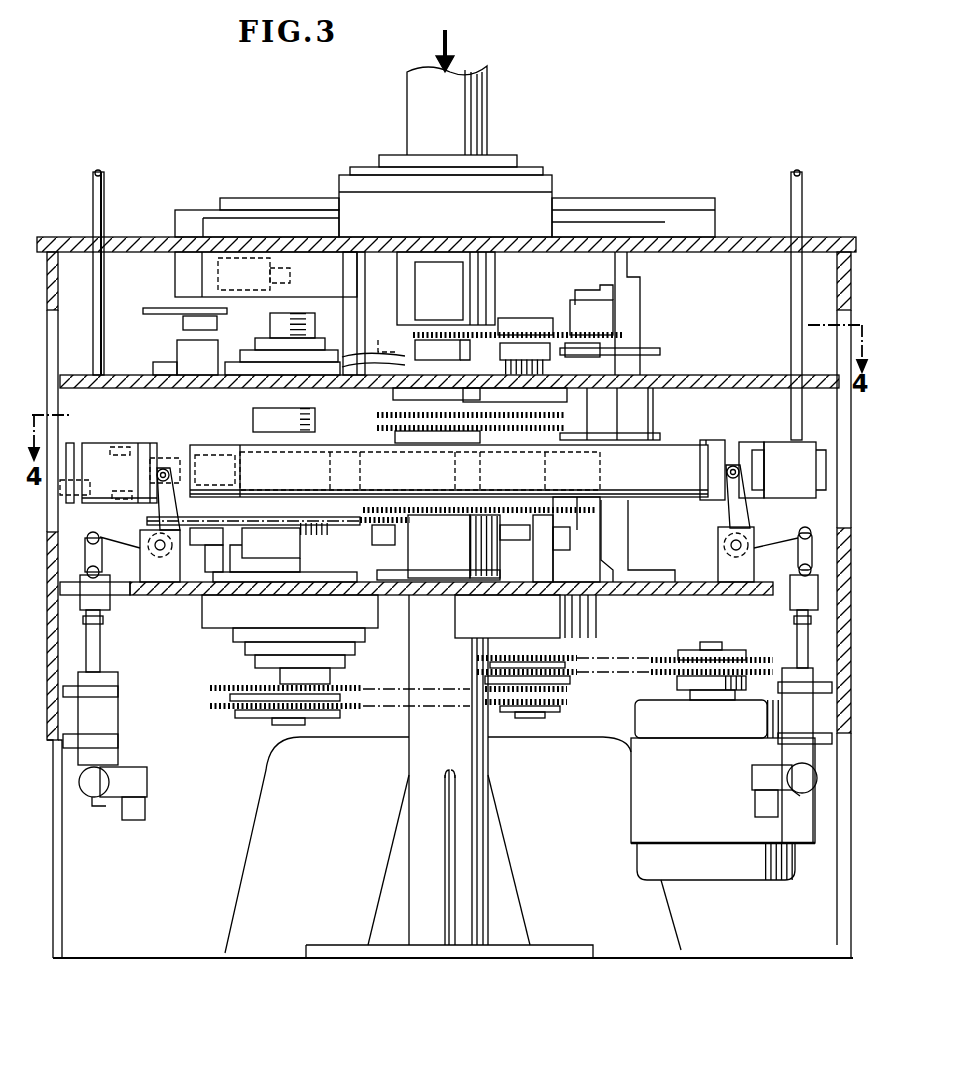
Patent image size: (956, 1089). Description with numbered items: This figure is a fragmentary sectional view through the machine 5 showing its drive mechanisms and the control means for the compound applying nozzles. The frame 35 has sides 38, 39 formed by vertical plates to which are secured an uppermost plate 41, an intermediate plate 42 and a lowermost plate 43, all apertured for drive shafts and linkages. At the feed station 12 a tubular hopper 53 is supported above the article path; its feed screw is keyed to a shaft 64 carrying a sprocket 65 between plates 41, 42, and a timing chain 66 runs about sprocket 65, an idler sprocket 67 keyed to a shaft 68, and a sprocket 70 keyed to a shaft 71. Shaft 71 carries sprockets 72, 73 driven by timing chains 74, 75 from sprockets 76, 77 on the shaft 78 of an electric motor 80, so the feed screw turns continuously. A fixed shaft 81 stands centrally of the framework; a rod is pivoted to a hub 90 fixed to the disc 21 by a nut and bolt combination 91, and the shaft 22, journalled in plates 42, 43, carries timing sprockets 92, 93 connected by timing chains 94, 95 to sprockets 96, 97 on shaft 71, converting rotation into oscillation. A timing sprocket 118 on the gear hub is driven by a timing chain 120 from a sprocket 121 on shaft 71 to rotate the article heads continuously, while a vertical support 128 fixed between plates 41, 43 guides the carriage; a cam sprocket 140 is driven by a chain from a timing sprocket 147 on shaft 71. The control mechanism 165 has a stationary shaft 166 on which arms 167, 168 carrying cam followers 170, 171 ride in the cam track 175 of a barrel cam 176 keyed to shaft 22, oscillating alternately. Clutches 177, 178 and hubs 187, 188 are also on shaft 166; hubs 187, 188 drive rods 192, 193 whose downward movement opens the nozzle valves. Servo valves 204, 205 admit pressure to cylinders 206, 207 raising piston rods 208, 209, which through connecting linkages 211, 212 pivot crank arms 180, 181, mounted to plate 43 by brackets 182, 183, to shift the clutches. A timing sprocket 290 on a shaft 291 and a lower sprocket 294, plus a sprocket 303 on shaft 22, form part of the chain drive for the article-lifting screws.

The machine 5 is at (657, 128).
The feed station 12 is at (512, 128).
The disc 21 is at (312, 300).
The shaft 22 is at (282, 312).
The frame 35 is at (742, 236).
The side 38 is at (47, 735).
The side 39 is at (837, 657).
The uppermost plate 41 is at (130, 236).
The intermediate plate 42 is at (135, 374).
The lowermost plate 43 is at (143, 594).
The tubular hopper 53 is at (405, 96).
The shaft 64 is at (373, 350).
The sprocket 65 is at (436, 330).
The timing chain 66 is at (498, 330).
The idler sprocket 67 is at (608, 318).
The shaft 68 is at (575, 296).
The sprocket 70 is at (525, 330).
The shaft 71 is at (518, 530).
The sprocket 72 is at (560, 640).
The sprocket 73 is at (590, 660).
The timing chain 74 is at (642, 650).
The timing chain 75 is at (620, 672).
The sprocket 76 is at (672, 655).
The sprocket 77 is at (672, 690).
The shaft 78 is at (720, 642).
The electric motor 80 is at (708, 731).
The fixed shaft 81 is at (449, 798).
The hub 90 is at (250, 245).
The threaded nut and bolt combination 91 is at (240, 312).
The timing sprocket 92 is at (212, 684).
The timing sprocket 93 is at (212, 712).
The timing chain 94 is at (426, 690).
The timing chain 95 is at (384, 736).
The timing sprocket 96 is at (570, 692).
The timing sprocket 97 is at (566, 722).
The timing sprocket 118 is at (394, 528).
The timing chain 120 is at (560, 512).
The sprocket 121 is at (557, 536).
The vertical support 128 is at (627, 290).
The sprocket 140 is at (392, 412).
The timing sprocket 147 is at (582, 402).
The control mechanism 165 is at (710, 425).
The stationary shaft 166 is at (820, 445).
The arm 167 is at (192, 440).
The arm 168 is at (430, 515).
The cam follower 170 is at (225, 452).
The cam follower 171 is at (299, 484).
The cam track 175 is at (457, 470).
The barrel cam 176 is at (350, 526).
The clutch 177 is at (156, 442).
The clutch 178 is at (747, 438).
The crank arm 180 is at (150, 486).
The crank arm 181 is at (720, 515).
The bracket 182 is at (140, 548).
The bracket 183 is at (722, 566).
The hub 187 is at (92, 455).
The hub 188 is at (790, 470).
The rod 192 is at (93, 311).
The rod 193 is at (791, 255).
The servo valve 204 is at (765, 808).
The servo valve 205 is at (128, 775).
The cylinder 206 is at (782, 718).
The cylinder 207 is at (112, 705).
The piston rod 208 is at (797, 640).
The piston rod 209 is at (102, 642).
The connecting linkage 211 is at (802, 548).
The connecting linkage 212 is at (80, 545).
The timing sprocket 290 is at (155, 307).
The shaft 291 is at (215, 334).
The sprocket 294 is at (212, 582).
The sprocket 303 is at (278, 582).